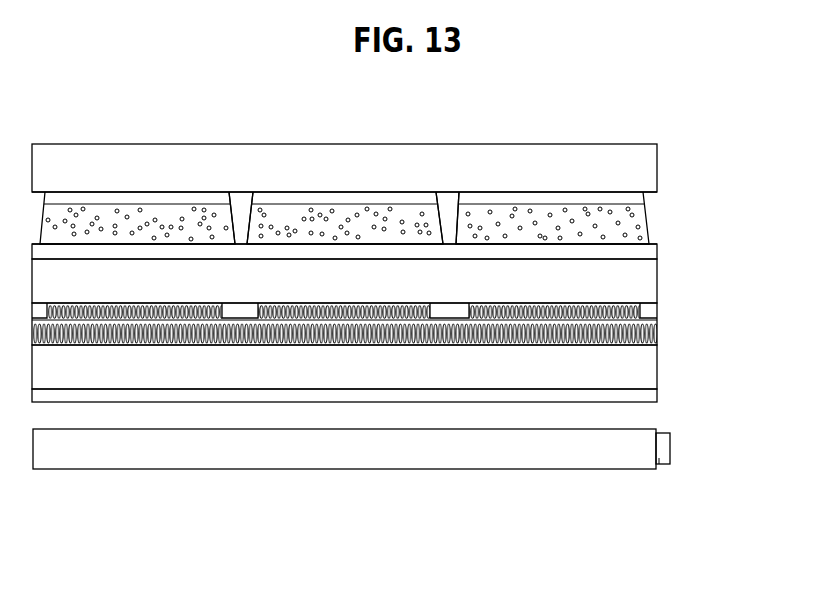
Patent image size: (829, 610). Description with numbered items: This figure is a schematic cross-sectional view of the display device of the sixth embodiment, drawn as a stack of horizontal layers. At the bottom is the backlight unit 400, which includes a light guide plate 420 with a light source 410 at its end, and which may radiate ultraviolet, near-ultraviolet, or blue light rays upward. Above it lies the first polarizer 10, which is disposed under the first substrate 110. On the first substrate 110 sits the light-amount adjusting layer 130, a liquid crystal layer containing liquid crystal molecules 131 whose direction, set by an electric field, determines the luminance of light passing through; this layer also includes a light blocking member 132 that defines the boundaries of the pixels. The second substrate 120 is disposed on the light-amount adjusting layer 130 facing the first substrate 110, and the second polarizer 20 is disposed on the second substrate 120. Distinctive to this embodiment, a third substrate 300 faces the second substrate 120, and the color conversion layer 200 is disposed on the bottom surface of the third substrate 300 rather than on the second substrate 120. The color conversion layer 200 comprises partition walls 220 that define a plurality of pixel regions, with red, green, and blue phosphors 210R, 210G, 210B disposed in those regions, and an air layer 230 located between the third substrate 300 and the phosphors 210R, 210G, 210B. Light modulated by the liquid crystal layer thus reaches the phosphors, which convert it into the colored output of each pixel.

The third substrate 300 is at (642, 168).
The color conversion layer 200 is at (377, 173).
The phosphor 210R is at (168, 213).
The phosphor 210G is at (305, 217).
The phosphor 210B is at (515, 213).
The air layer 230 is at (88, 198).
The partition wall 220 is at (452, 218).
The second polarizer 20 is at (640, 252).
The second substrate 120 is at (642, 285).
The light-amount adjusting layer 130 is at (411, 325).
The light blocking member 132 is at (648, 312).
The liquid crystal molecules 131 is at (652, 333).
The first substrate 110 is at (642, 365).
The first polarizer 10 is at (645, 396).
The backlight unit 400 is at (355, 499).
The light guide plate 420 is at (610, 460).
The light source 410 is at (667, 466).